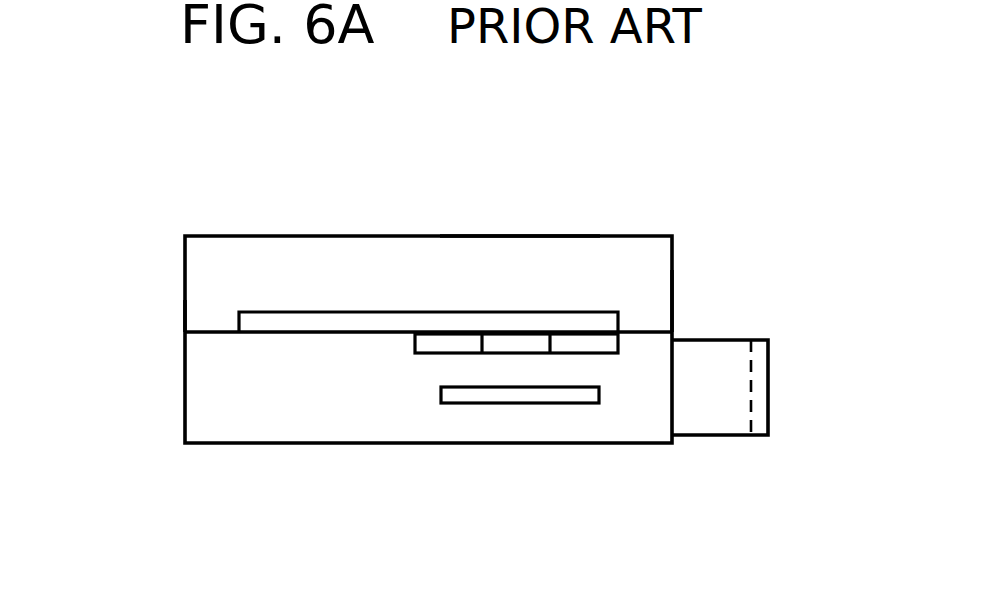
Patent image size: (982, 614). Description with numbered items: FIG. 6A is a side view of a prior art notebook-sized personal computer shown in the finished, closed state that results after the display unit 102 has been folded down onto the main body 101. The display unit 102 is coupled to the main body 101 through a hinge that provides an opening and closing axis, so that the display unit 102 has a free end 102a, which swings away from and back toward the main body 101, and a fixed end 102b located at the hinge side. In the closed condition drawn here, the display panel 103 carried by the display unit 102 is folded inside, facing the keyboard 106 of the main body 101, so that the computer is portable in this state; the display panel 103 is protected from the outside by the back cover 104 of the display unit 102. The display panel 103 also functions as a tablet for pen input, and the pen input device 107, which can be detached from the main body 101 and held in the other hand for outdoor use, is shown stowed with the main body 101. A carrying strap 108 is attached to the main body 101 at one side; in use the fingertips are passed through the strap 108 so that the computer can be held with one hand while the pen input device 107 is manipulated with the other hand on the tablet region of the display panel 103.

The main body 101 is at (378, 420).
The display unit 102 is at (336, 272).
The free end 102a is at (208, 308).
The fixed end 102b is at (662, 303).
The display panel 103 is at (295, 322).
The back cover 104 is at (507, 237).
The keyboard 106 is at (450, 345).
The pen input device 107 is at (533, 397).
The carrying strap 108 is at (705, 415).